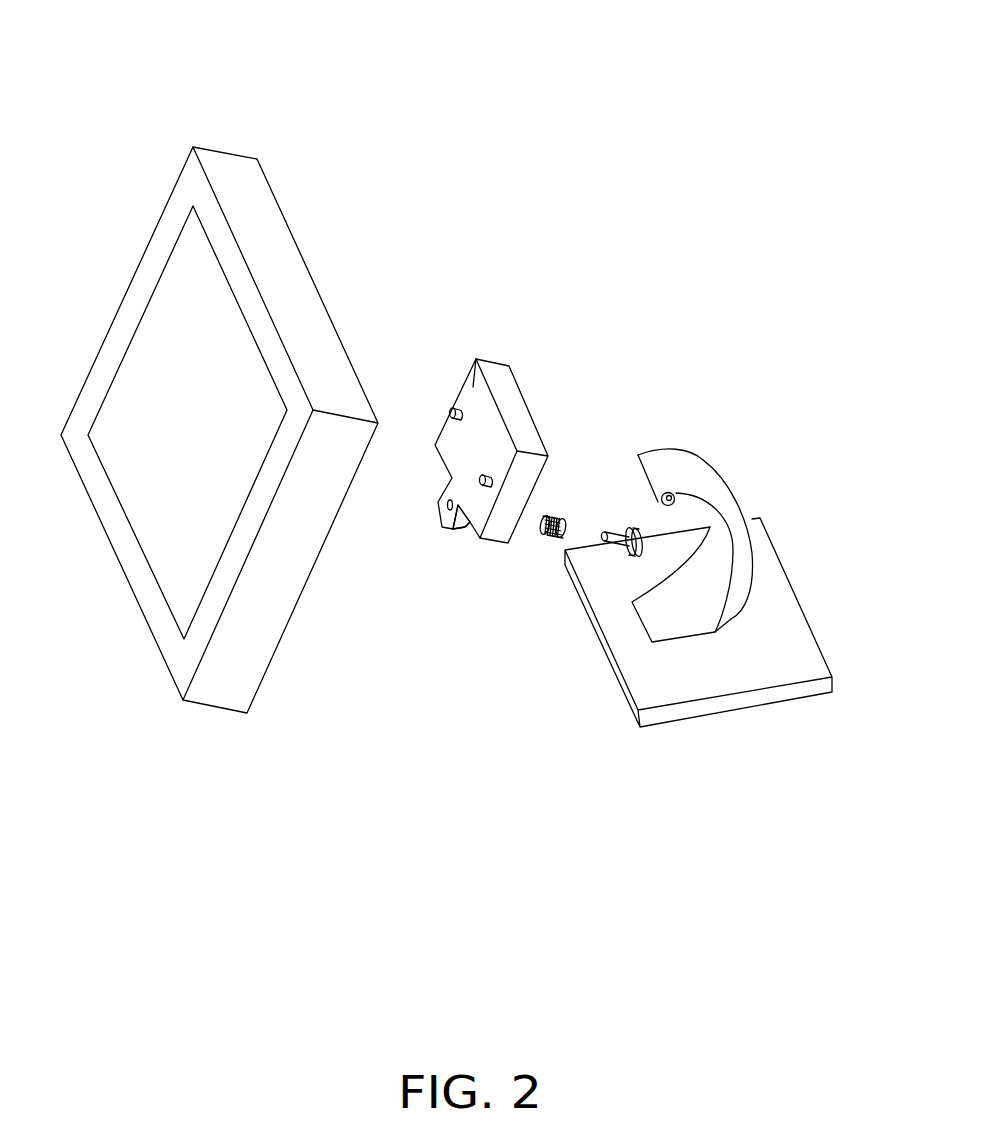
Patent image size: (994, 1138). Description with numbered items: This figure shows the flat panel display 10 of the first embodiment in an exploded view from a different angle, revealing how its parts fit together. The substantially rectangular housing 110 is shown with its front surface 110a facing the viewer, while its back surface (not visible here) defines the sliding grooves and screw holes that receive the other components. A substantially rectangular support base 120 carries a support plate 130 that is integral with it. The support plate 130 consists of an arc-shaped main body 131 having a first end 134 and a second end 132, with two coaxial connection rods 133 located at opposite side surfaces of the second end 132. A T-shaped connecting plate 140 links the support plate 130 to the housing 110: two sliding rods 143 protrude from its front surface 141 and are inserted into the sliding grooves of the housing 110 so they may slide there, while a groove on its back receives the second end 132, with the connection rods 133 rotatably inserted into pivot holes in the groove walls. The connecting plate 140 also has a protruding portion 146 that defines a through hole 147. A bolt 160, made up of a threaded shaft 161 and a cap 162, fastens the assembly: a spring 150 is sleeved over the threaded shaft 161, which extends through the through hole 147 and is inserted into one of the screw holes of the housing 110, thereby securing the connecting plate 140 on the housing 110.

The flat panel display 10 is at (512, 36).
The housing 110 is at (225, 430).
The front surface 110a is at (213, 322).
The support base 120 is at (778, 622).
The support plate 130 is at (673, 534).
The arc-shaped main body 131 is at (733, 527).
The second end 132 is at (650, 458).
The connection rods 133 is at (674, 496).
The first end 134 is at (650, 617).
The connecting plate 140 is at (477, 448).
The front surface 141 is at (476, 360).
The sliding rods 143 is at (457, 407).
The protruding portion 146 is at (448, 518).
The through hole 147 is at (442, 506).
The spring 150 is at (538, 528).
The bolt 160 is at (581, 533).
The threaded shaft 161 is at (608, 533).
The cap 162 is at (631, 530).